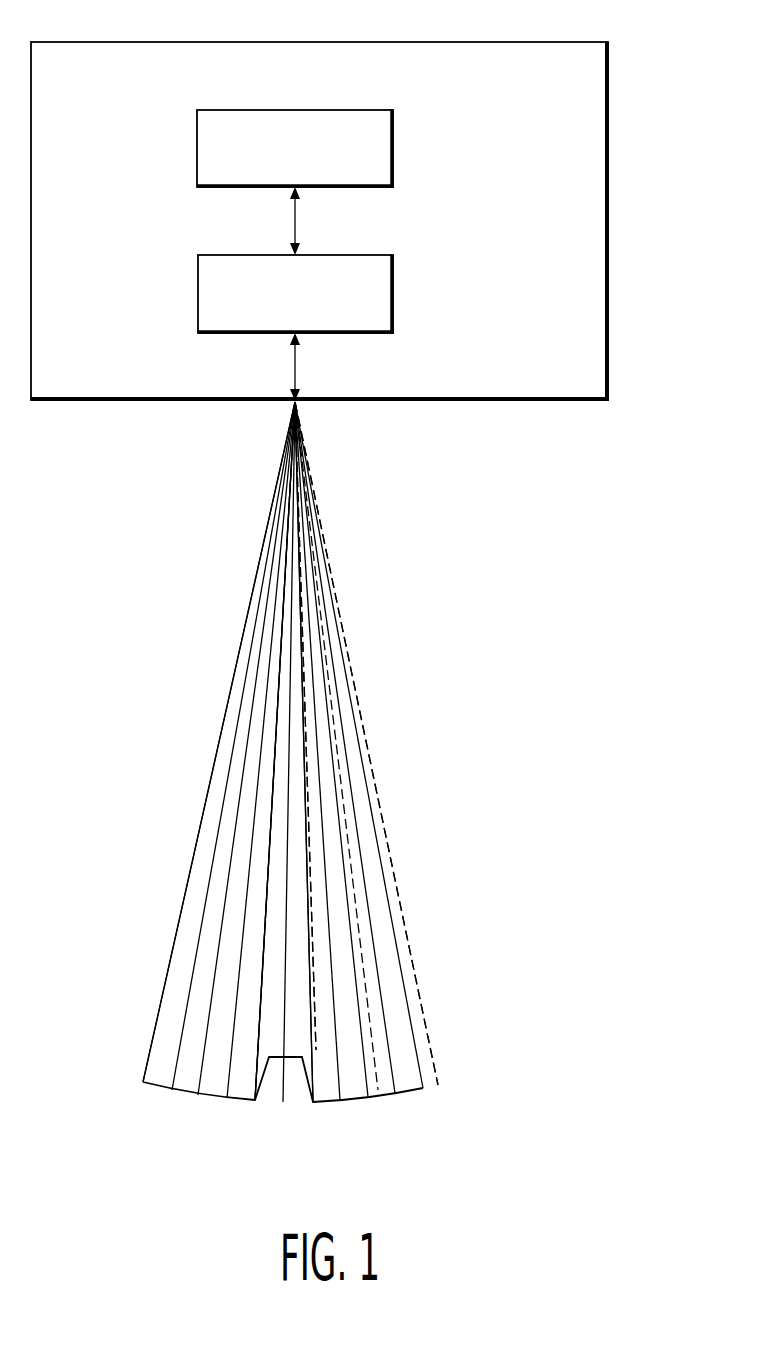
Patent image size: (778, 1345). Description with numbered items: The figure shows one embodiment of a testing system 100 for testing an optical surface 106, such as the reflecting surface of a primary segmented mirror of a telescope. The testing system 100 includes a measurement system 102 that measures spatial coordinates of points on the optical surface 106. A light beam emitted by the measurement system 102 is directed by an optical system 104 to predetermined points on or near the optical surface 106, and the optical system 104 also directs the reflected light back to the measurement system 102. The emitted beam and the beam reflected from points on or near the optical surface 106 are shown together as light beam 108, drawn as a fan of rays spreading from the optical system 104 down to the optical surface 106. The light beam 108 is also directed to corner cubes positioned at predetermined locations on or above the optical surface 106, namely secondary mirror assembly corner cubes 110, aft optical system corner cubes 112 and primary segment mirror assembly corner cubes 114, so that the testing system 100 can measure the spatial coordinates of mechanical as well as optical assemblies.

The testing system 100 is at (609, 67).
The measurement system 102 is at (394, 156).
The optical system 104 is at (394, 299).
The optical surface 106 is at (157, 1088).
The light beam 108 is at (390, 620).
The secondary mirror assembly (SMA) corner cubes 110 is at (307, 790).
The aft optical system (AOS) corner cubes 112 is at (262, 1045).
The primary segment mirror assembly (PMSA) corner cubes 114 is at (140, 1076).